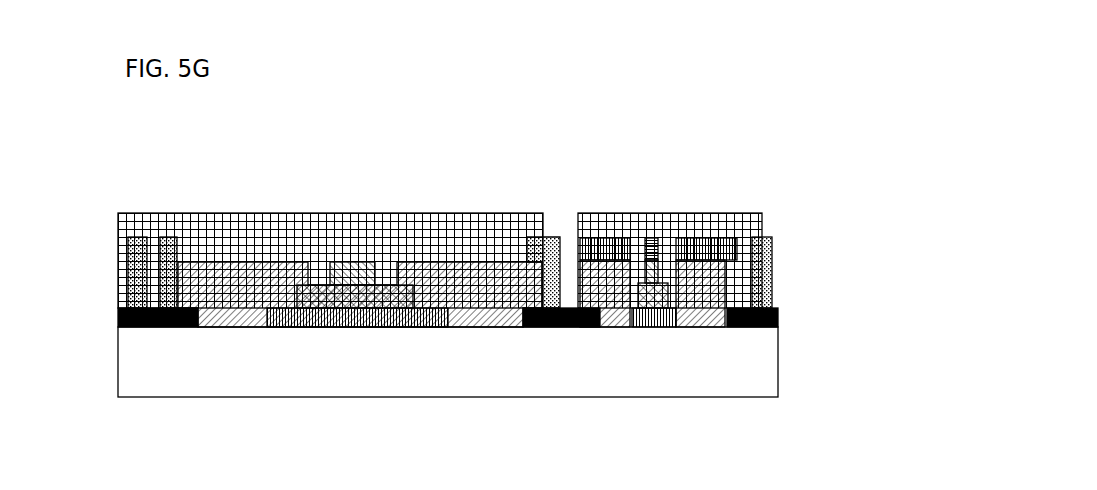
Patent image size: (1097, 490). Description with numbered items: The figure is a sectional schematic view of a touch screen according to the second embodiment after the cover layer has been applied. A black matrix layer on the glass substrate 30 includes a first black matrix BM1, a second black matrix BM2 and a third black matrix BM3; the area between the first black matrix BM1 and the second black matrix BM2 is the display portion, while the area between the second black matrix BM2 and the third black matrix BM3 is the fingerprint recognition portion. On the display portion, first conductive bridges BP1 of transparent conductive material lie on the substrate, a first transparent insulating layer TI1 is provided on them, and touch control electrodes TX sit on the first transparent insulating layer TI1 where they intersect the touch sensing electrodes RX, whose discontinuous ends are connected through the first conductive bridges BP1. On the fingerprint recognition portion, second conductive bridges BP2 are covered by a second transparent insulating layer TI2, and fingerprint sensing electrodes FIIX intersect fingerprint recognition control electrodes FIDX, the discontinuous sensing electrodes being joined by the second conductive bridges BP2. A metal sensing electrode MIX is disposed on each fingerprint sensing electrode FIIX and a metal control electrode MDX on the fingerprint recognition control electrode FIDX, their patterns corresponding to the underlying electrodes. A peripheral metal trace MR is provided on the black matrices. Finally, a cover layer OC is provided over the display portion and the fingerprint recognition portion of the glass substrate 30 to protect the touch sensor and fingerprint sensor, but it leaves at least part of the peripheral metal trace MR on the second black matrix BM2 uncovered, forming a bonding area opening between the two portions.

The glass substrate 30 is at (782, 362).
The cover layer OC is at (584, 211).
The peripheral metal trace MR is at (540, 234).
The touch sensing electrode RX is at (264, 259).
The touch control electrode TX is at (358, 259).
The first transparent insulating layer TI1 is at (376, 298).
The first conductive bridge BP1 is at (349, 329).
The metal sensing electrode MIX is at (608, 237).
The fingerprint sensing electrode FIIX is at (611, 329).
The metal control electrode MDX is at (653, 237).
The second transparent insulating layer TI2 is at (655, 278).
The fingerprint recognition control electrode FIDX is at (659, 298).
The second conductive bridge BP2 is at (642, 329).
The first black matrix BM1 is at (115, 318).
The second black matrix BM2 is at (529, 329).
The third black matrix BM3 is at (782, 318).